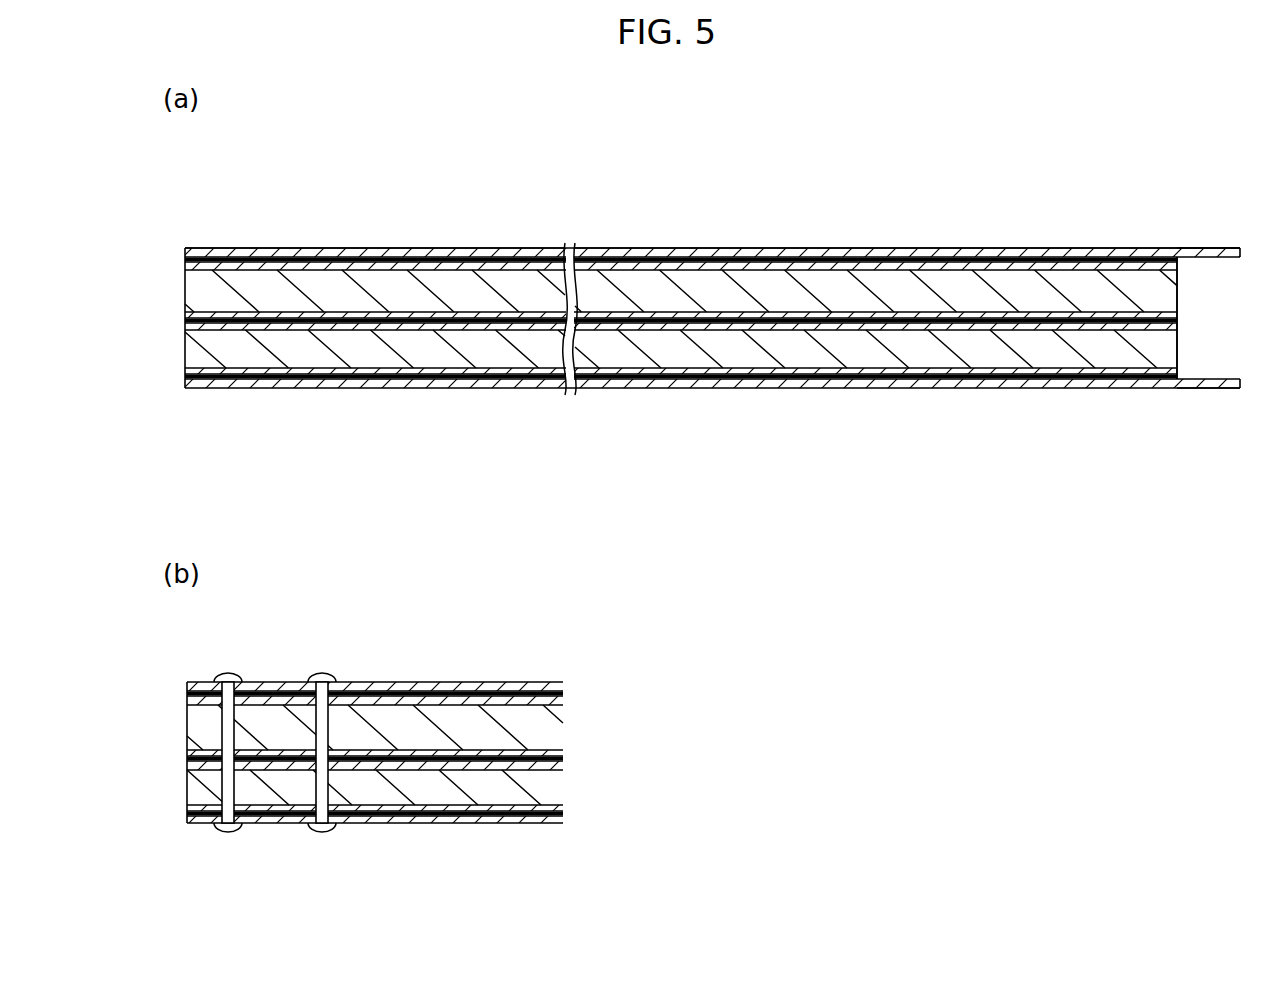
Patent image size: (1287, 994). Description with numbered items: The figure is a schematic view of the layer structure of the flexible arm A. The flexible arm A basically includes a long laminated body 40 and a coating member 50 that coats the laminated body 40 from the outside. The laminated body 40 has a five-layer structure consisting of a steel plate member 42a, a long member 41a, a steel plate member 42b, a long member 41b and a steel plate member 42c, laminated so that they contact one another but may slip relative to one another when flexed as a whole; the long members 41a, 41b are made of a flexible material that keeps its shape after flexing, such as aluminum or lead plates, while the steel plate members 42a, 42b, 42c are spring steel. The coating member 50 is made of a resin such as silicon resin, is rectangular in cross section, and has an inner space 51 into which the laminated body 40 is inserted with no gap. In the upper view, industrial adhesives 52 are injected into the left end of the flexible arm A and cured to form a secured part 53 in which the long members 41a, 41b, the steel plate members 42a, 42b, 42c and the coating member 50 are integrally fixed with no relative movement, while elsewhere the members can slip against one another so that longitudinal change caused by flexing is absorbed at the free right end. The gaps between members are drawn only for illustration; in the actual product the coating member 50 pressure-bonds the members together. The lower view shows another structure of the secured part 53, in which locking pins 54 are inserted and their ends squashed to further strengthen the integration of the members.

The long laminated body 40 is at (1046, 371).
The long member 41a is at (782, 293).
The long member 41b is at (745, 343).
The steel plate member 42a is at (891, 257).
The steel plate member 42b is at (851, 322).
The steel plate member 42c is at (641, 388).
The coating member 50 is at (697, 248).
The space 51 is at (1215, 337).
The industrial adhesives 52 is at (330, 262).
The secured part 53 is at (258, 238).
The locking pins 54 is at (235, 784).
The flexible arm A is at (998, 184).